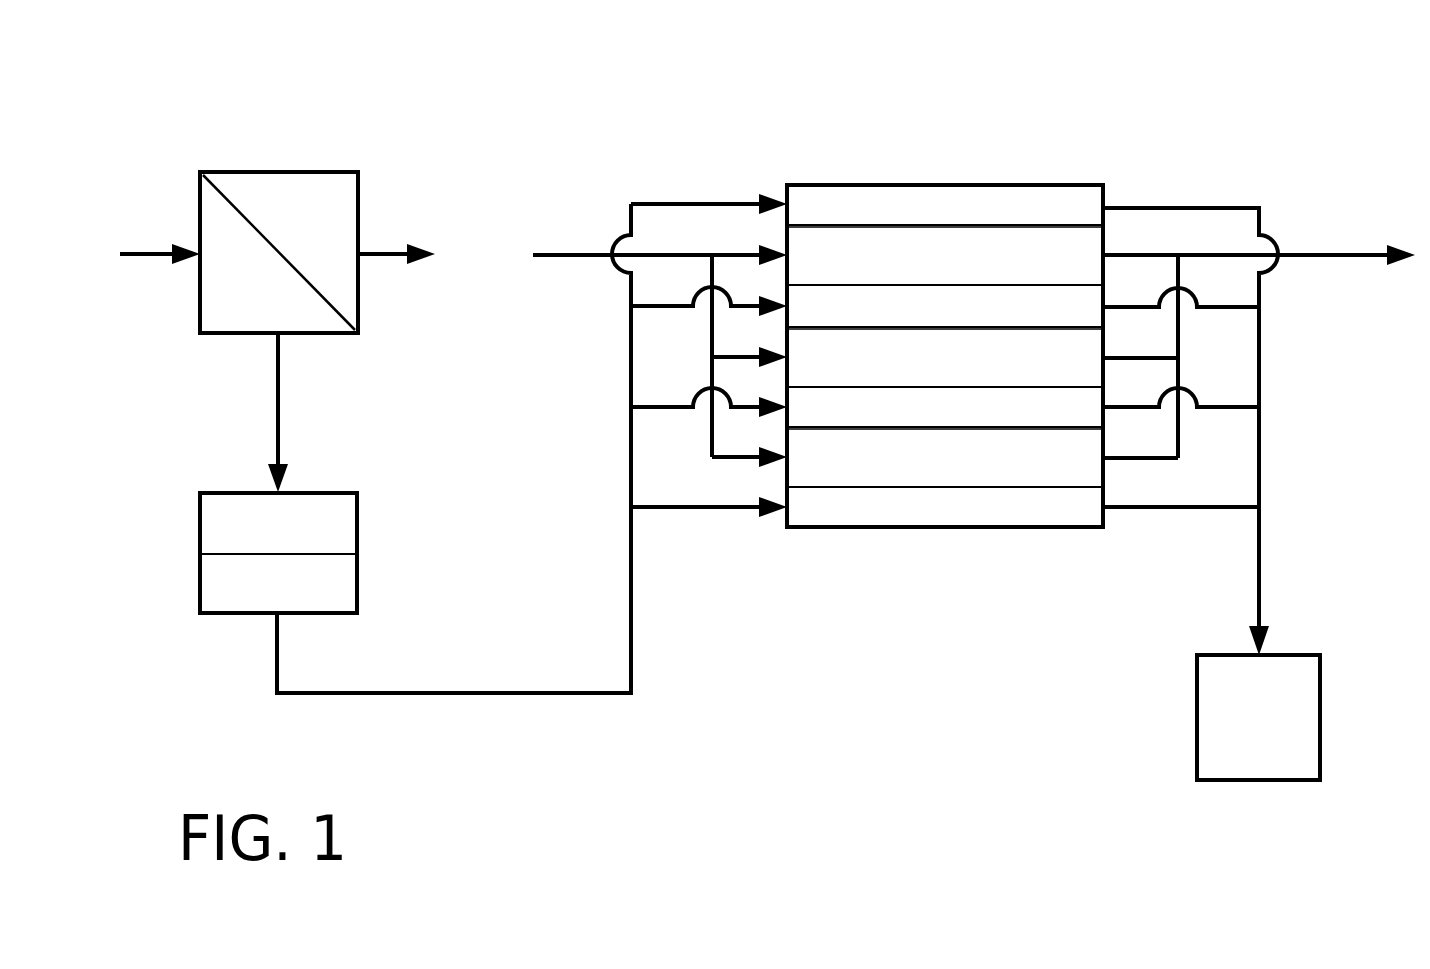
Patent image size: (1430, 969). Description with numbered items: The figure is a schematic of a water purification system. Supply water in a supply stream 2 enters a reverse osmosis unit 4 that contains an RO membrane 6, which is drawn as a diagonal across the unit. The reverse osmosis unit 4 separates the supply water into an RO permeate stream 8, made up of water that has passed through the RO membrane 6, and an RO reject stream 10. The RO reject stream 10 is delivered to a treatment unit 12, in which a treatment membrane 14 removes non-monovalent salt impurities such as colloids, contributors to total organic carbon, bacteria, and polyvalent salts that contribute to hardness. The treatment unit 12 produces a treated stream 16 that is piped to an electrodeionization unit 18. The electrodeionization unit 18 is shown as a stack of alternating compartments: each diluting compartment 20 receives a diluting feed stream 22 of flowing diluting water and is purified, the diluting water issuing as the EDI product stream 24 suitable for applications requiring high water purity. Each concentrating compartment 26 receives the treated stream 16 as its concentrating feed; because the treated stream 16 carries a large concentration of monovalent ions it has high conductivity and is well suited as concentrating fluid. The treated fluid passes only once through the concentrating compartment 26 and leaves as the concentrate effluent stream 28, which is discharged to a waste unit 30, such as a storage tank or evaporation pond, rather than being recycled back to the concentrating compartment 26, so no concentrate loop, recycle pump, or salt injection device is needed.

The supply stream 2 is at (152, 270).
The reverse osmosis unit 4 is at (285, 130).
The RO membrane 6 is at (280, 232).
The RO permeate stream 8 is at (387, 267).
The RO reject stream 10 is at (293, 382).
The treatment unit 12 is at (170, 542).
The treatment membrane 14 is at (337, 562).
The treated stream 16 is at (268, 662).
The electrodeionization unit 18 is at (1010, 137).
The diluting compartment 20 is at (910, 276).
The diluting feed stream 22 is at (573, 245).
The EDI product stream 24 is at (1338, 247).
The concentrating compartment 26 is at (1026, 226).
The concentrate effluent stream 28 is at (1165, 518).
The waste unit 30 is at (1183, 743).